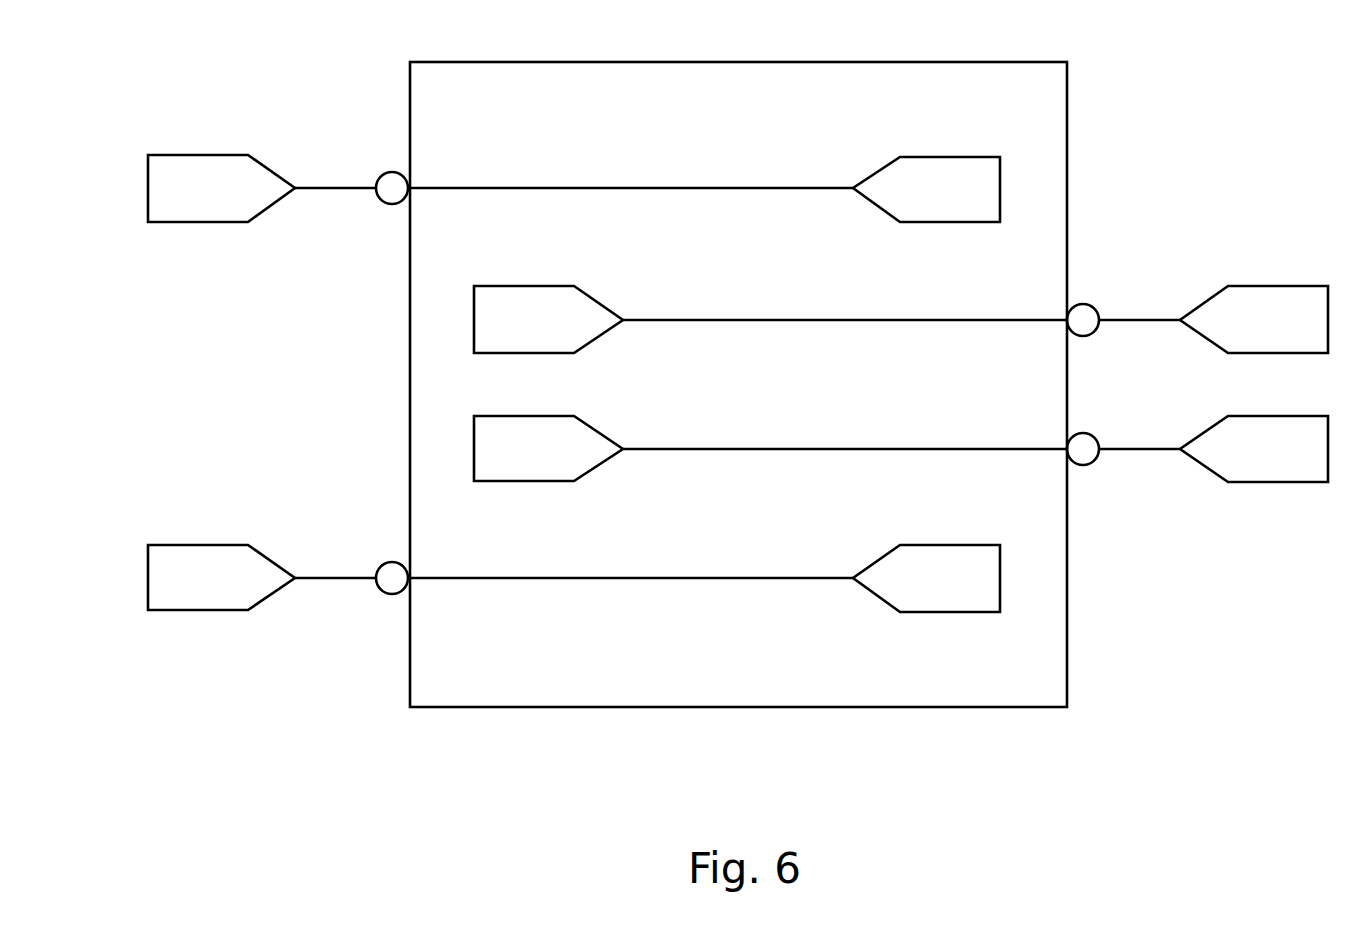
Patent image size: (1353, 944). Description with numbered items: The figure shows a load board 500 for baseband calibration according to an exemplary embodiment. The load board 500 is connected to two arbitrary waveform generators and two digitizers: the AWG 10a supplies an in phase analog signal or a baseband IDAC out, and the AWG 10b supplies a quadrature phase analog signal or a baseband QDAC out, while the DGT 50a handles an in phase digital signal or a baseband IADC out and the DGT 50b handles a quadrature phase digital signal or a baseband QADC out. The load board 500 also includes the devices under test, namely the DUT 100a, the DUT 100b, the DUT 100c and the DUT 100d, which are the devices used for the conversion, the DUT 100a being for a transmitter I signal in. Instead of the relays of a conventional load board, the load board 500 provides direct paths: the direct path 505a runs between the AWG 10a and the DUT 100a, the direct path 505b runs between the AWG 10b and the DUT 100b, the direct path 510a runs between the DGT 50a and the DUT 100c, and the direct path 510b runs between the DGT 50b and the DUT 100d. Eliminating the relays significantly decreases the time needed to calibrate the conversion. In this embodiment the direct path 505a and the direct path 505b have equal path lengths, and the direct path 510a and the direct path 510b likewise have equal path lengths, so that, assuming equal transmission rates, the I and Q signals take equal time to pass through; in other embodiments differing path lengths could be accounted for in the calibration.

The load board 500 is at (1262, 124).
The AWG 10a is at (182, 155).
The AWG 10b is at (182, 610).
The DUT 100a is at (1000, 188).
The DUT 100b is at (1000, 578).
The DUT 100c is at (474, 449).
The DUT 100d is at (474, 320).
The DGT 50a is at (1295, 286).
The DGT 50b is at (1295, 482).
The direct path 505a is at (705, 188).
The direct path 505b is at (705, 578).
The direct path 510a is at (705, 320).
The direct path 510b is at (705, 449).